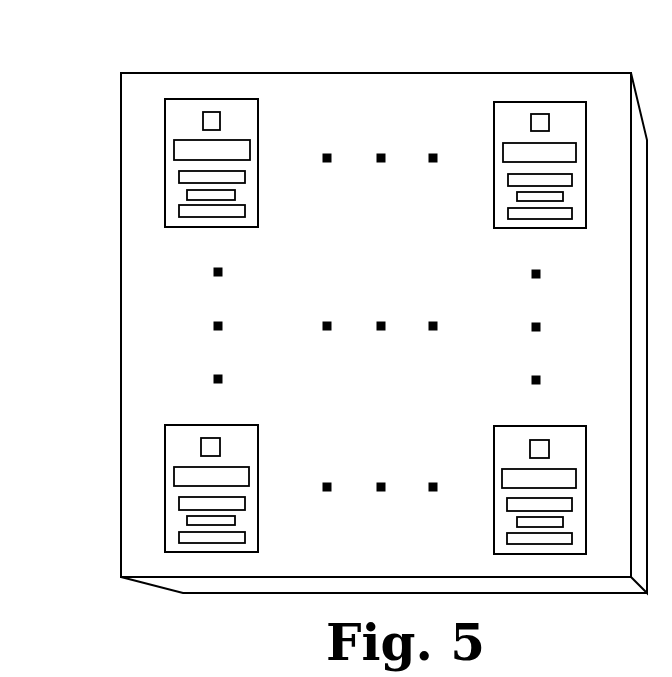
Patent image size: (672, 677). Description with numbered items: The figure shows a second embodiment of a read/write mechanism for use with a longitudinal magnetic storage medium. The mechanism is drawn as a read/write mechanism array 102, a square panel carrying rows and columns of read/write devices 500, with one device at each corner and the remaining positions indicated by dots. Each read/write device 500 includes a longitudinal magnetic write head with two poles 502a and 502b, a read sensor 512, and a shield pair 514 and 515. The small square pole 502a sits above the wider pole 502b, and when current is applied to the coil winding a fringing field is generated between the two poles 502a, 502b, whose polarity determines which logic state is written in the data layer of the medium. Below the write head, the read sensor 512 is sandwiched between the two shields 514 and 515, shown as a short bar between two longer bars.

The read/write device 500 is at (144, 126).
The pole 502a is at (210, 118).
The pole 502b is at (210, 150).
The shield 515 is at (210, 176).
The read sensor 512 is at (210, 194).
The shield 514 is at (210, 211).
The read/write mechanism array 102 is at (121, 543).